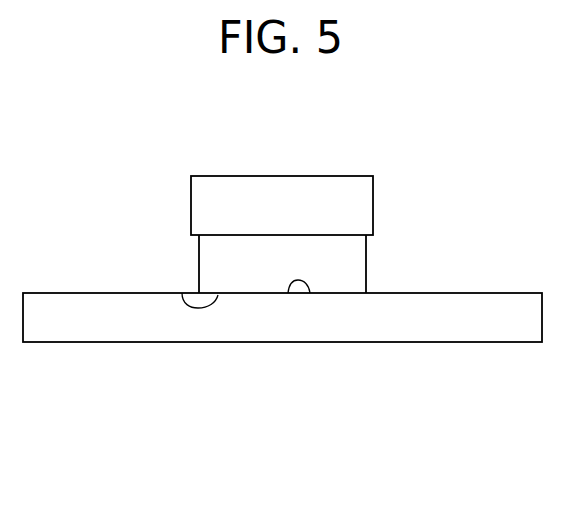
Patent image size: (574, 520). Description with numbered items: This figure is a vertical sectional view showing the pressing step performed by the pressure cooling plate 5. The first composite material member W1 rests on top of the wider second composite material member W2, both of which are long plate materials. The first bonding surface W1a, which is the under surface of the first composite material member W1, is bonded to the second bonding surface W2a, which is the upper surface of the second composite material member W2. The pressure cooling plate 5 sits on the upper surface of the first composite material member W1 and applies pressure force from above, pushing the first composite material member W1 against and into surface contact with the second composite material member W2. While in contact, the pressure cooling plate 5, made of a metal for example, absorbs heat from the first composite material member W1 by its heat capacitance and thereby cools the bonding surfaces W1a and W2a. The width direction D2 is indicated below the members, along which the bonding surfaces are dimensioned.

The pressure cooling plate 5 is at (373, 203).
The first composite material member W1 is at (366, 260).
The first bonding surface W1a is at (182, 293).
The second composite material member W2 is at (416, 342).
The second bonding surface W2a is at (310, 293).
The width direction D2 is at (365, 468).